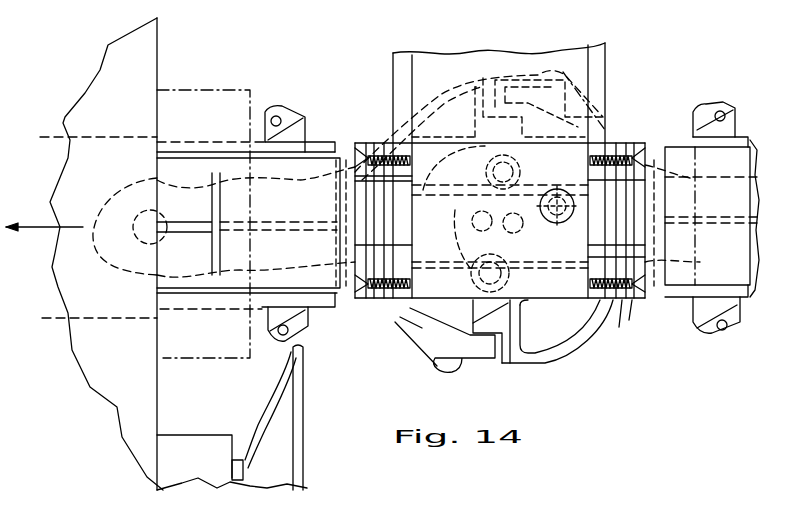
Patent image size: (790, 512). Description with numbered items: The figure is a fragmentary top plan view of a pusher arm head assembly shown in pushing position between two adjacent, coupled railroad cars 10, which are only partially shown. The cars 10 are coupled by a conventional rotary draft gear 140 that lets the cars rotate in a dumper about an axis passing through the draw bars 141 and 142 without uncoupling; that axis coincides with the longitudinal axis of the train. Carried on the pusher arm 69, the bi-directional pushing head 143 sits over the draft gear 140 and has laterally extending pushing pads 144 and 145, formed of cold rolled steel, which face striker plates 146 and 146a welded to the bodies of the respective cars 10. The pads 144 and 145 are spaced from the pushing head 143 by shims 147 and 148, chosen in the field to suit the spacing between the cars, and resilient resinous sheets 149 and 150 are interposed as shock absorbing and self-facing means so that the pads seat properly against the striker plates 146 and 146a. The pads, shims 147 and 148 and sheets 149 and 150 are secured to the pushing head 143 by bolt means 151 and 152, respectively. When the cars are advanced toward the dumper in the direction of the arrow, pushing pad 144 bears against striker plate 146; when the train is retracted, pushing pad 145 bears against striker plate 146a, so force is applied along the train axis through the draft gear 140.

The railroad cars 10 is at (158, 49).
The pusher arm 69 is at (491, 56).
The rotary draft gear 140 is at (554, 363).
The draw bar 141 is at (357, 294).
The draw bar 142 is at (648, 300).
The pushing head 143 is at (569, 300).
The pushing pad 144 is at (368, 300).
The pushing pad 145 is at (642, 300).
The striker plate 146 is at (317, 142).
The striker plate 146a is at (665, 142).
The shim 147 is at (378, 302).
The shim 148 is at (622, 300).
The resilient resinous sheet 149 is at (388, 150).
The resilient resinous sheet 150 is at (608, 145).
The bolt means 151 is at (357, 155).
The bolt means 152 is at (647, 153).